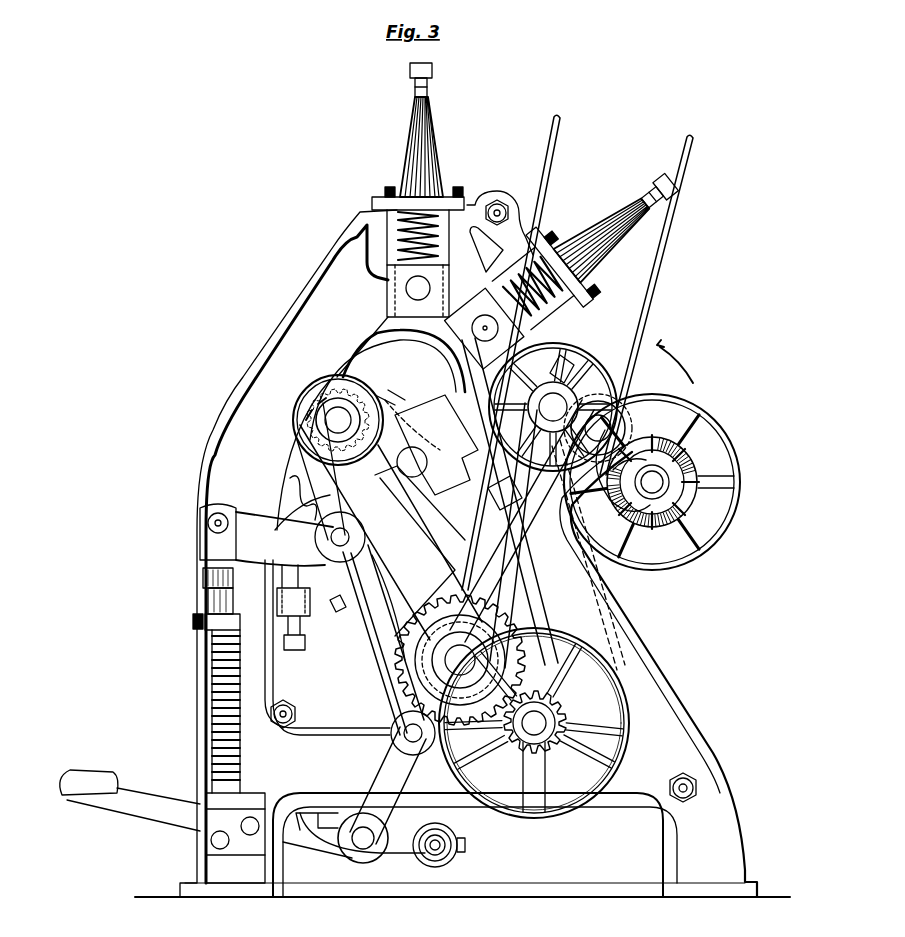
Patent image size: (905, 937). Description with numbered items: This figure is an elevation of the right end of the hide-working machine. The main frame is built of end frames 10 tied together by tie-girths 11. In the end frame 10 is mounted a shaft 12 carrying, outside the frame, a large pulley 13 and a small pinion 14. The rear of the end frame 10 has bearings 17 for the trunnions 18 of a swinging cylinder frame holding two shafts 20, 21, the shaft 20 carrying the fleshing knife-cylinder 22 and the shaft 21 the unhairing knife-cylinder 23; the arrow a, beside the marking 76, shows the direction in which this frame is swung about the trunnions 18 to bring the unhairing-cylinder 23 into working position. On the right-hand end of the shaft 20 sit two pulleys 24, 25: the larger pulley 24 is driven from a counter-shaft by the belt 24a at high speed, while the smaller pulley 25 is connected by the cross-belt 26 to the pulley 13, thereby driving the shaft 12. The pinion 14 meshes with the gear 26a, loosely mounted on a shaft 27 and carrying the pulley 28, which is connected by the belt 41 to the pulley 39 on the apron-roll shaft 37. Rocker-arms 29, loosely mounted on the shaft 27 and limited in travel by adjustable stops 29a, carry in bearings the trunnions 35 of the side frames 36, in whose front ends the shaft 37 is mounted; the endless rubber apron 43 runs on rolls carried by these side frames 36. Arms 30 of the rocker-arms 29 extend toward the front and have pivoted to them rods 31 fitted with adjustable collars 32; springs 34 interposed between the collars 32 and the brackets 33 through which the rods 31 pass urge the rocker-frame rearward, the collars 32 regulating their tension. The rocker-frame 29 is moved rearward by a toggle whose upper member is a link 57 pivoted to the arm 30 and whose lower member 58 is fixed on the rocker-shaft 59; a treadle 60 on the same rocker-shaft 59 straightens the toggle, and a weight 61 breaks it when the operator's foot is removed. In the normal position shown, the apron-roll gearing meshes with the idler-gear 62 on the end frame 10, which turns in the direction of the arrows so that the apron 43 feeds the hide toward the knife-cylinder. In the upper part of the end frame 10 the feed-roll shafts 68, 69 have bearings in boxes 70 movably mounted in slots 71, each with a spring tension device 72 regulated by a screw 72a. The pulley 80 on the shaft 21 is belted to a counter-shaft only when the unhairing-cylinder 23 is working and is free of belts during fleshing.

The end frames 10 is at (248, 396).
The tie-girths 11 is at (437, 228).
The shaft 12 is at (538, 726).
The large pulley 13 is at (548, 808).
The small pinion 14 is at (560, 722).
The bearings 17 is at (640, 482).
The trunnions 18 is at (606, 432).
The shaft 20 is at (560, 400).
The shaft 21 is at (690, 500).
The knife-cylinder 22 is at (600, 400).
The knife-cylinder 23 is at (684, 462).
The large pulley 24 is at (540, 350).
The belt 24a is at (556, 140).
The small pulley 25 is at (565, 360).
The cross-belt 26 is at (520, 535).
The gear 26a is at (452, 608).
The shaft 27 is at (432, 670).
The pulley 28 is at (418, 660).
The rocker-arms 29 is at (390, 600).
The adjustable stops 29a is at (510, 501).
The arms 30 is at (266, 535).
The rods 31 is at (218, 603).
The adjustable collars 32 is at (218, 625).
The brackets 33 is at (215, 800).
The springs 34 is at (212, 700).
The trunnions 35 is at (412, 462).
The side frames 36 is at (431, 445).
The shaft 37 is at (338, 413).
The pulley 39 is at (303, 402).
The belt 41 is at (330, 500).
The endless apron 43 is at (386, 395).
The link 57 is at (408, 688).
The lower toggle member 58 is at (385, 775).
The rocker-shaft 59 is at (364, 848).
The treadle 60 is at (128, 795).
The weight 61 is at (442, 840).
The idler-gear 62 is at (292, 480).
The shaft 68 is at (415, 288).
The shaft 69 is at (482, 332).
The boxes 70 is at (400, 303).
The slots 71 is at (560, 300).
The spring tension device 72 is at (404, 222).
The screw 72a is at (428, 76).
The arrow direction 76 is at (640, 395).
The pulley 80 is at (732, 510).